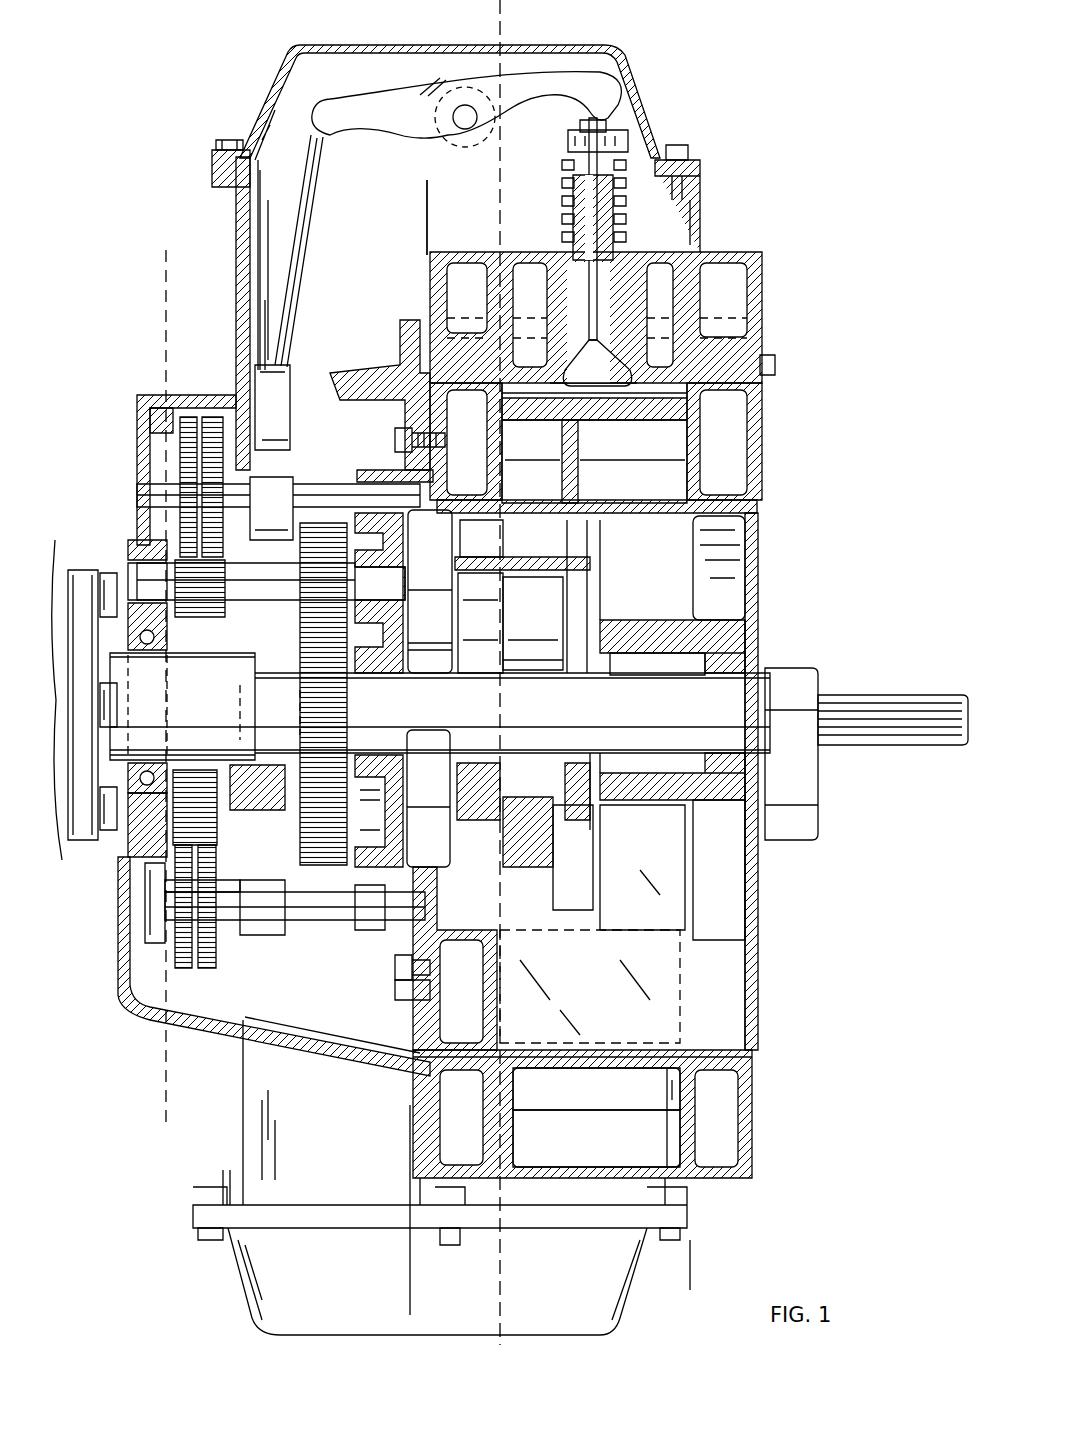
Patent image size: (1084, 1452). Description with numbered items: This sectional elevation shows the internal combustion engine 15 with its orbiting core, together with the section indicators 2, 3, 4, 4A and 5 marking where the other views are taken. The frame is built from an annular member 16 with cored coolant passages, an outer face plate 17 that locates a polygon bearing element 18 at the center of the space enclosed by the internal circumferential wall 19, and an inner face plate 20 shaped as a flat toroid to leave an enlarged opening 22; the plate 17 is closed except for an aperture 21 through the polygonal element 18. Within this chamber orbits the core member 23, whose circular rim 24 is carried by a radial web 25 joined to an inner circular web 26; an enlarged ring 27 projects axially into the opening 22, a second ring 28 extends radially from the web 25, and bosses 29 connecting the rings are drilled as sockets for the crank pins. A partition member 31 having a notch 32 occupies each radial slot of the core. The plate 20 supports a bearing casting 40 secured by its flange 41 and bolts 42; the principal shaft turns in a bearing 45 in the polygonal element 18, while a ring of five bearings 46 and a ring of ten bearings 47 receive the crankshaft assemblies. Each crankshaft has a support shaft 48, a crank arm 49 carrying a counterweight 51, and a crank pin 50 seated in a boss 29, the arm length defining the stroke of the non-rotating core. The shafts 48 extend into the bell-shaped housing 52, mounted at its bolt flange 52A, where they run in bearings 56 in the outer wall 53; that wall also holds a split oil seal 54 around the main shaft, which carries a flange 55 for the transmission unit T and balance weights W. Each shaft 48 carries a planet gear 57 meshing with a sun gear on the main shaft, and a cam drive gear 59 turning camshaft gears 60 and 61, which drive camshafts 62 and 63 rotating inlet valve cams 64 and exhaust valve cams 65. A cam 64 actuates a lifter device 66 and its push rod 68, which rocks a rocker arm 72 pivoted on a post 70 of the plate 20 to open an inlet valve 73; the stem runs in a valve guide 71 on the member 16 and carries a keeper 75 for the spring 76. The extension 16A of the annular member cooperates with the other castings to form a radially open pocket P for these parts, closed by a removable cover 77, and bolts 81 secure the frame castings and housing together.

The section line 2- 2 is at (500, 18).
The section line 3- 3 is at (693, 221).
The section line 4- 4 is at (429, 222).
The section line 4A- 4A is at (426, 190).
The section line 5- 5 is at (163, 250).
The internal combustion engine 15 is at (795, 382).
The annular member 16 is at (575, 1160).
The extension of annular member 16A is at (700, 203).
The outer face plate 17 is at (765, 545).
The polygon bearing element 18 is at (630, 622).
The internal circumferential wall 19 is at (572, 1068).
The inner face plate 20 is at (415, 1158).
The aperture 21 is at (640, 680).
The enlarged opening 22 is at (500, 930).
The core member 23 is at (740, 350).
The circular rim 24 is at (612, 445).
The radial web 25 is at (560, 470).
The inner circular web 26 is at (612, 495).
The enlarged ring 27 is at (490, 822).
The ring 28 is at (595, 822).
The bosses 29 is at (533, 580).
The partition member 31 is at (620, 990).
The notch 32 is at (585, 875).
The bearing casting 40 is at (360, 912).
The flange 41 is at (400, 995).
The bolts 42 is at (398, 432).
The bearing 45 is at (790, 668).
The bearings 46 is at (445, 598).
The bearings 47 is at (370, 470).
The support shaft 48 is at (405, 598).
The crank arm 49 is at (430, 591).
The crank pin 50 is at (548, 557).
The counterweight 51 is at (430, 655).
The bell-shaped housing 52 is at (150, 1015).
The bolt flange 52A is at (232, 205).
The outer wall 53 is at (140, 418).
The oil seal 54 is at (150, 775).
The flange 55 is at (100, 860).
The bearings 56 is at (135, 548).
The planet gear 57 is at (300, 583).
The cam drive gear 59 is at (205, 617).
The camshaft gear 60 is at (190, 417).
The camshaft gear 61 is at (235, 458).
The camshaft 62 is at (312, 485).
The camshaft 63 is at (320, 912).
The inlet valve cams 64 is at (271, 508).
The exhaust valve cams 65 is at (262, 935).
The lifter device 66 is at (278, 390).
The push rod 68 is at (305, 255).
The post 70 is at (568, 145).
The valve guide 71 is at (565, 200).
The rocker arm 72 is at (365, 90).
The inlet valve 73 is at (575, 390).
The keeper 75 is at (612, 125).
The spring 76 is at (650, 160).
The cover 77 is at (270, 88).
The bolts 81 is at (395, 348).
The pocket P is at (292, 195).
The transmission unit T is at (62, 540).
The balance weights W is at (258, 810).